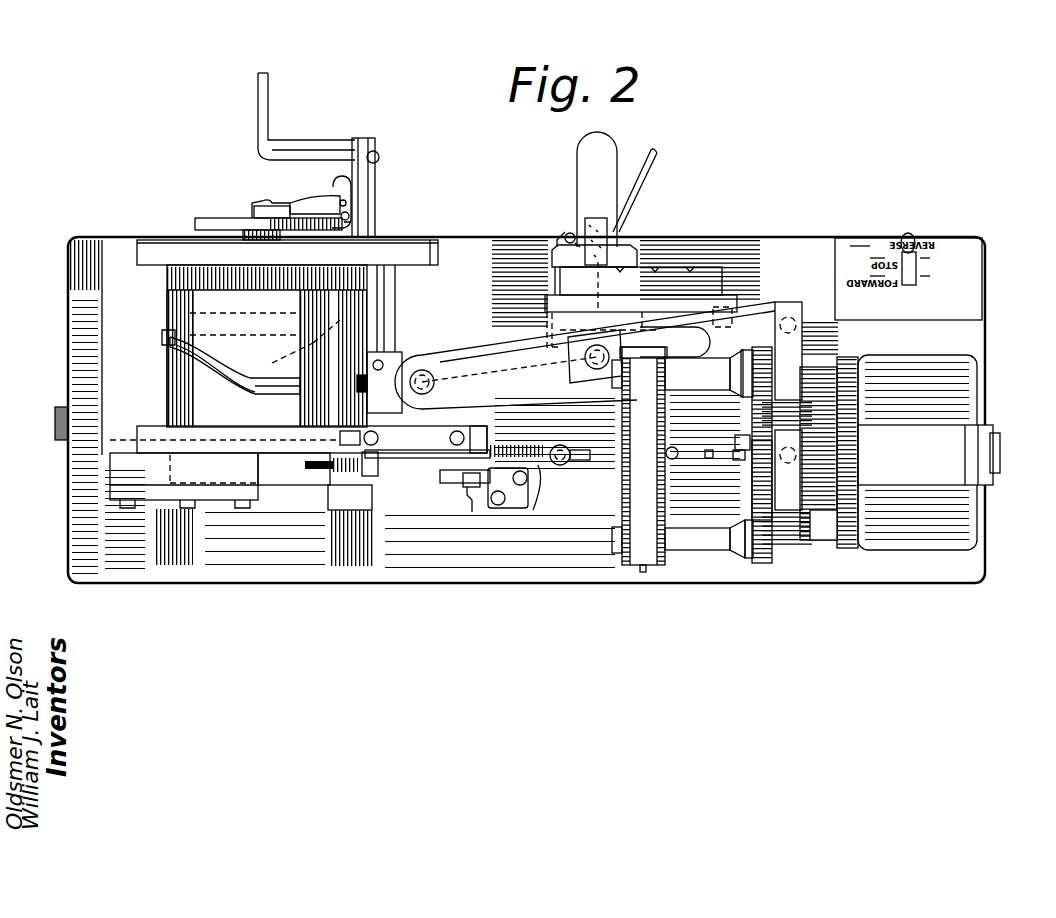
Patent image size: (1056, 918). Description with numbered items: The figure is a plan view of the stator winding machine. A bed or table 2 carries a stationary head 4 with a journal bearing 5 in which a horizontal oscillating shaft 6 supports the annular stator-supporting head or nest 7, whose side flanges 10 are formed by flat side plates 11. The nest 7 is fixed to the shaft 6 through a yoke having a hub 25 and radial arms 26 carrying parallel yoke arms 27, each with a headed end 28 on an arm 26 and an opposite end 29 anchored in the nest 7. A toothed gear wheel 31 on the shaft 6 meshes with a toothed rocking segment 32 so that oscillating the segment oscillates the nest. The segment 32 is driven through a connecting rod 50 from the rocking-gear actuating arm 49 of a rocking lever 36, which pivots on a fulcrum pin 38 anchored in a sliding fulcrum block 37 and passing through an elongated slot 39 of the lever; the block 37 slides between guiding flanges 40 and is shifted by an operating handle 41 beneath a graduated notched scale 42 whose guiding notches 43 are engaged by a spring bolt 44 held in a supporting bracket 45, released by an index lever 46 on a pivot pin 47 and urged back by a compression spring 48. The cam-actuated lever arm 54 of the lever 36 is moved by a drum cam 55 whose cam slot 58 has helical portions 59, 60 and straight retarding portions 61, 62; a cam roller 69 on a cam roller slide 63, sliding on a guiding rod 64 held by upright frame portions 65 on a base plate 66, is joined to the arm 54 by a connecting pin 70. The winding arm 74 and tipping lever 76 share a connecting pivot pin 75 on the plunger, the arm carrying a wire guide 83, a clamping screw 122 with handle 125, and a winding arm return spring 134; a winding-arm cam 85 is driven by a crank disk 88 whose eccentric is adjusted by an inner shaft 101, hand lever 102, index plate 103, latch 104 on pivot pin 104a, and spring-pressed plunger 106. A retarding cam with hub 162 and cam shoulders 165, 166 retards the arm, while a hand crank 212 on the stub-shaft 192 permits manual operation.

The bed or table 2 is at (737, 238).
The stationary head 4 is at (858, 370).
The journal bearing 5 is at (947, 432).
The oscillating shaft 6 is at (1001, 440).
The stator-supporting head or nest 7 is at (622, 562).
The side flanges 10 is at (266, 191).
The side plates 11 is at (622, 510).
The hub 25 is at (757, 480).
The radial arms 26 is at (760, 348).
The yoke arms 27 is at (708, 364).
The headed end 28 is at (757, 375).
The opposite ends of yoke arms 29 is at (613, 385).
The toothed gear wheel 31 is at (830, 445).
The toothed rocking segment 32 is at (825, 543).
The rocking lever 36 is at (524, 347).
The sliding fulcrum block 37 is at (642, 313).
The fulcrum pin 38 is at (587, 362).
The elongated slot 39 is at (673, 340).
The guiding flanges 40 is at (547, 302).
The operating handle 41 is at (590, 153).
The graduated notched scale 42 is at (640, 267).
The guiding notches 43 is at (697, 268).
The spring bolt 44 is at (592, 272).
The supporting bracket or head 45 is at (567, 250).
The index lever or grip arm 46 is at (655, 152).
The pivot pin 47 is at (567, 235).
The compression spring 48 is at (605, 216).
The rocking-gear actuating arm 49 is at (750, 312).
The connecting rod 50 is at (785, 397).
The cam-actuated lever arm 54 is at (473, 355).
The drum cam 55 is at (173, 387).
The cam slot 58 is at (222, 372).
The helical cam-slot portion 59 is at (203, 383).
The helical cam-slot portion 60 is at (294, 345).
The retarding cam-slot portion 61 is at (278, 402).
The retarding cam-slot portion 62 is at (247, 318).
The cam roller slide 63 is at (398, 353).
The guiding rod 64 is at (390, 308).
The upright frame portions 65 is at (388, 245).
The base plate 66 is at (125, 231).
The cam roller 69 is at (366, 387).
The connecting pin 70 is at (430, 386).
The winding arm 74 is at (535, 508).
The connecting pivot pin 75 is at (418, 462).
The tipping lever 76 is at (445, 472).
The wire guide 83 is at (540, 448).
The winding-arm cam 85 is at (110, 493).
The crank disk or head 88 is at (260, 457).
The inner shaft 101 is at (262, 202).
The eccentric-adjusting hand lever 102 is at (300, 212).
The index plate 103 is at (213, 222).
The hand operated latch 104 is at (344, 185).
The pivot pin 104a is at (352, 216).
The spring-pressed bolt or plunger 106 is at (346, 203).
The clamping screw 122 is at (472, 512).
The handle 125 is at (467, 487).
The winding arm return spring 134 is at (340, 452).
The hub 162 is at (740, 437).
The cam shoulder 165 is at (709, 456).
The cam shoulder 166 is at (740, 450).
The stub-shaft 192 is at (362, 140).
The hand-lever or crank 212 is at (270, 106).